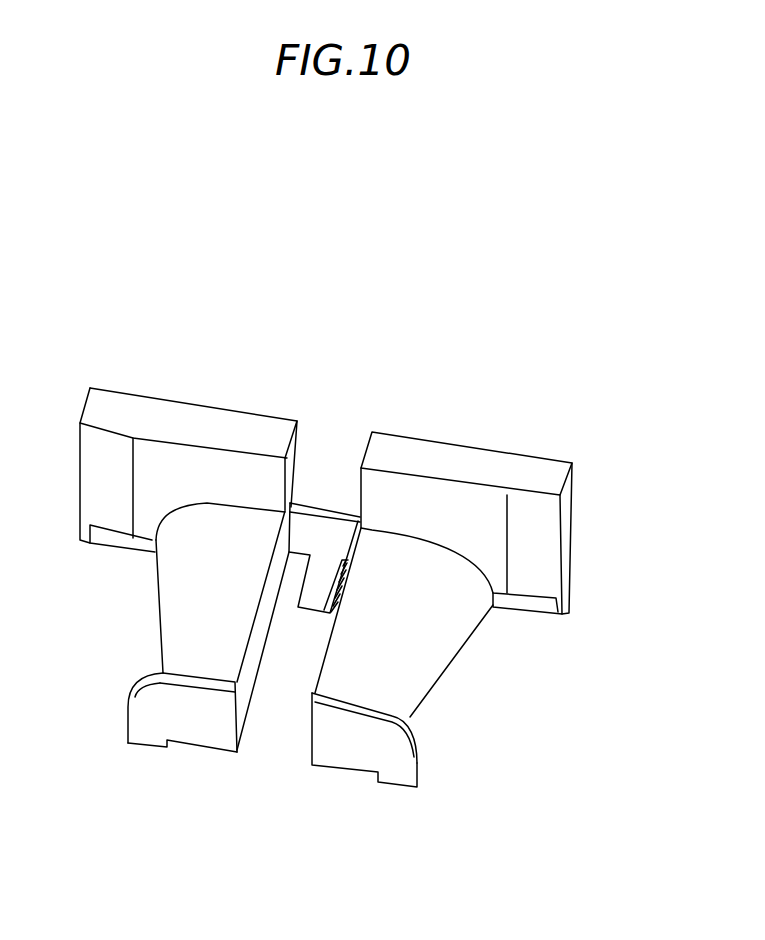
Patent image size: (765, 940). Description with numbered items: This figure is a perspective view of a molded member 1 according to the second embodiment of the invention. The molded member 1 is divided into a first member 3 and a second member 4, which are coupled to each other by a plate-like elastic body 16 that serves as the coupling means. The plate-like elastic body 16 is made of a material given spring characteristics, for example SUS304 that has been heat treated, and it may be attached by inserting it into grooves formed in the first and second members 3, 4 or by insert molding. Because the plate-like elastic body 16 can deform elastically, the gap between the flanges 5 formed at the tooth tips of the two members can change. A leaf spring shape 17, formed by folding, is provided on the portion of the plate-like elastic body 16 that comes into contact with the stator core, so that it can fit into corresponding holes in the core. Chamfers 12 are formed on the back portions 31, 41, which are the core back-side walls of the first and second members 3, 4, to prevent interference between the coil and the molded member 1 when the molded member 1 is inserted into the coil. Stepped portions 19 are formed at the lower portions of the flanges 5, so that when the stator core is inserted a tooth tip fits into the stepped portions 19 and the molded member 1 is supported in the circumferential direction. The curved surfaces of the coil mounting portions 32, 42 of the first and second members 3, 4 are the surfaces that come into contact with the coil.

The molded member 1 is at (326, 317).
The first member 3 is at (158, 418).
The back portion 31 is at (187, 462).
The coil mounting portion 32 is at (172, 598).
The second member 4 is at (453, 460).
The back portion 41 is at (465, 513).
The coil mounting portion 42 is at (453, 618).
The chamfer 12 is at (550, 555).
The plate-like elastic body 16 is at (313, 506).
The leaf spring shape 17 is at (312, 593).
The flange 5 is at (160, 682).
The stepped portion 19 is at (178, 745).